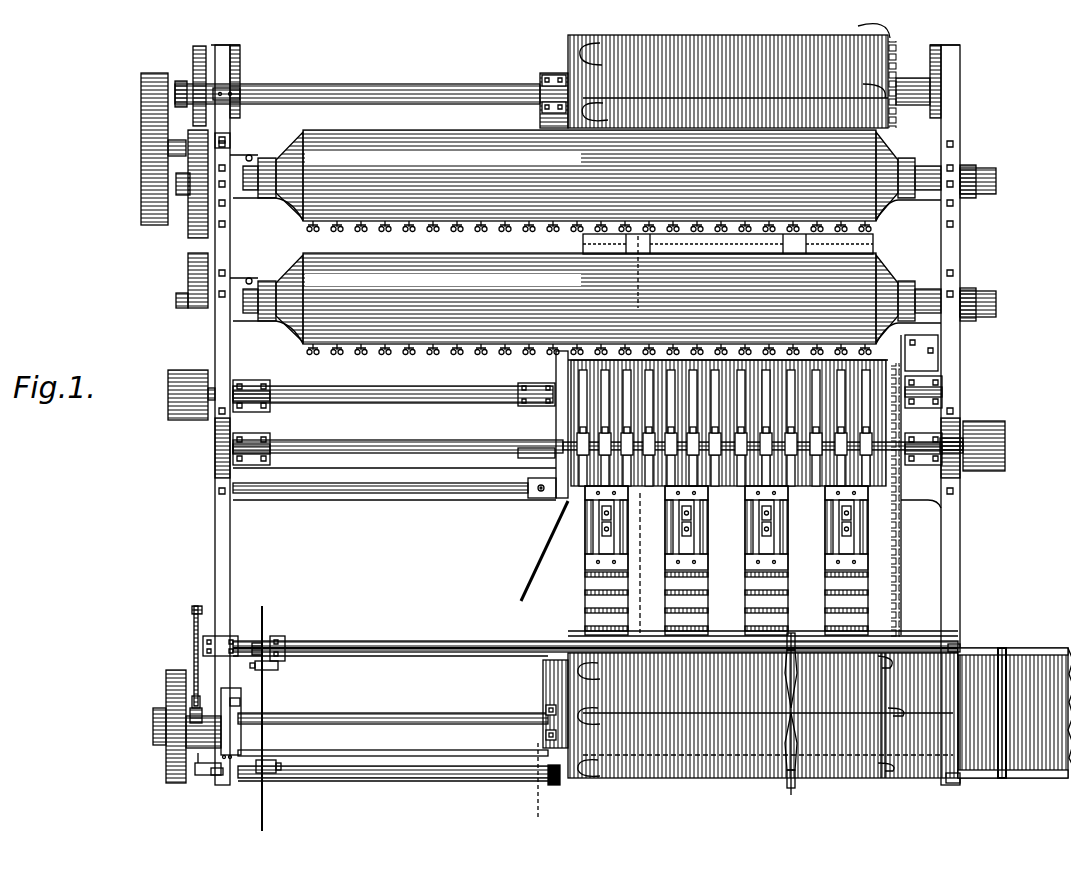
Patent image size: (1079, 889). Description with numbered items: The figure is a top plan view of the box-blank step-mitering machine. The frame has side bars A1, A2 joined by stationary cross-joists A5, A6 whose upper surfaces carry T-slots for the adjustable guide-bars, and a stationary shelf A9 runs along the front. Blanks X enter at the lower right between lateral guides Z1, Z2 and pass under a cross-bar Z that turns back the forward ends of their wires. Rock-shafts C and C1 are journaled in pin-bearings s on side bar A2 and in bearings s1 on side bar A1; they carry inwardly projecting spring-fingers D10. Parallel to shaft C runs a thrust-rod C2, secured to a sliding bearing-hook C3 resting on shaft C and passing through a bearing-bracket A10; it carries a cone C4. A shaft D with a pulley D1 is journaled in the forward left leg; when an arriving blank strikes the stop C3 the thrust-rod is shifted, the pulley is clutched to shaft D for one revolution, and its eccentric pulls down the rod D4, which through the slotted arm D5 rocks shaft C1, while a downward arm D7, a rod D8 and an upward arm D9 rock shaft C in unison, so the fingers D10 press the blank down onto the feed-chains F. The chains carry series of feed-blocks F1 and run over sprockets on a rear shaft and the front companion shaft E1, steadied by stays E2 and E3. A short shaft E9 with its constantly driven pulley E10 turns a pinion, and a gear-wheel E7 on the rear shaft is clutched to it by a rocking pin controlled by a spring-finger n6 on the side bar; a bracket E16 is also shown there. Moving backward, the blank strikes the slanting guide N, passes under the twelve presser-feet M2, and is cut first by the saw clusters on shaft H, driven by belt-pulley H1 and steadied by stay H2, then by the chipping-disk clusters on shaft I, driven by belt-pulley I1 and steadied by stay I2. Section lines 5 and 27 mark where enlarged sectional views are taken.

The side bar A1 is at (207, 540).
The side bar A2 is at (952, 538).
The feed-chains F is at (389, 84).
The stay E2 is at (533, 72).
The gear-wheel E7 is at (187, 55).
The spring-finger n6 is at (213, 84).
The pulley E10 is at (140, 123).
The short shaft E9 is at (170, 130).
The bracket E16 is at (215, 128).
The blank X is at (800, 401).
The belt-pulley I1 is at (156, 390).
The shaft I is at (396, 396).
The stay I2 is at (512, 380).
The shaft H is at (453, 440).
The stay H2 is at (512, 448).
The belt-pulley H1 is at (981, 424).
The cross-joist A6 is at (355, 495).
The presser-feet M2 is at (643, 405).
The feed-blocks F1 is at (580, 573).
The section line 5 is at (598, 584).
The slanting guide N is at (539, 538).
The rock-shaft C1 is at (438, 636).
The cross-joist A5 is at (366, 633).
The lateral guide Z2 is at (1050, 645).
The lateral guide Z1 is at (1041, 765).
The cross-bar Z is at (996, 662).
The pin-bearings s is at (953, 637).
The spring-fingers D10 is at (780, 668).
The companion shaft E1 is at (371, 710).
The stay E3 is at (535, 703).
The stationary shelf A9 is at (435, 752).
The rock-shaft C is at (329, 772).
The thrust-rod C2 is at (452, 772).
The sliding bearing-hook C3 is at (551, 778).
The section line 27 is at (478, 805).
The shaft D is at (145, 720).
The rod D8 is at (262, 697).
The downward-extending arm D7 is at (270, 655).
The upwardly-extending arm D9 is at (270, 756).
The arm D5 is at (190, 648).
The rod D4 is at (185, 602).
The pulley D1 is at (187, 678).
The bearing-bracket A10 is at (192, 766).
The cone C4 is at (209, 768).
The bearings s1 is at (260, 711).